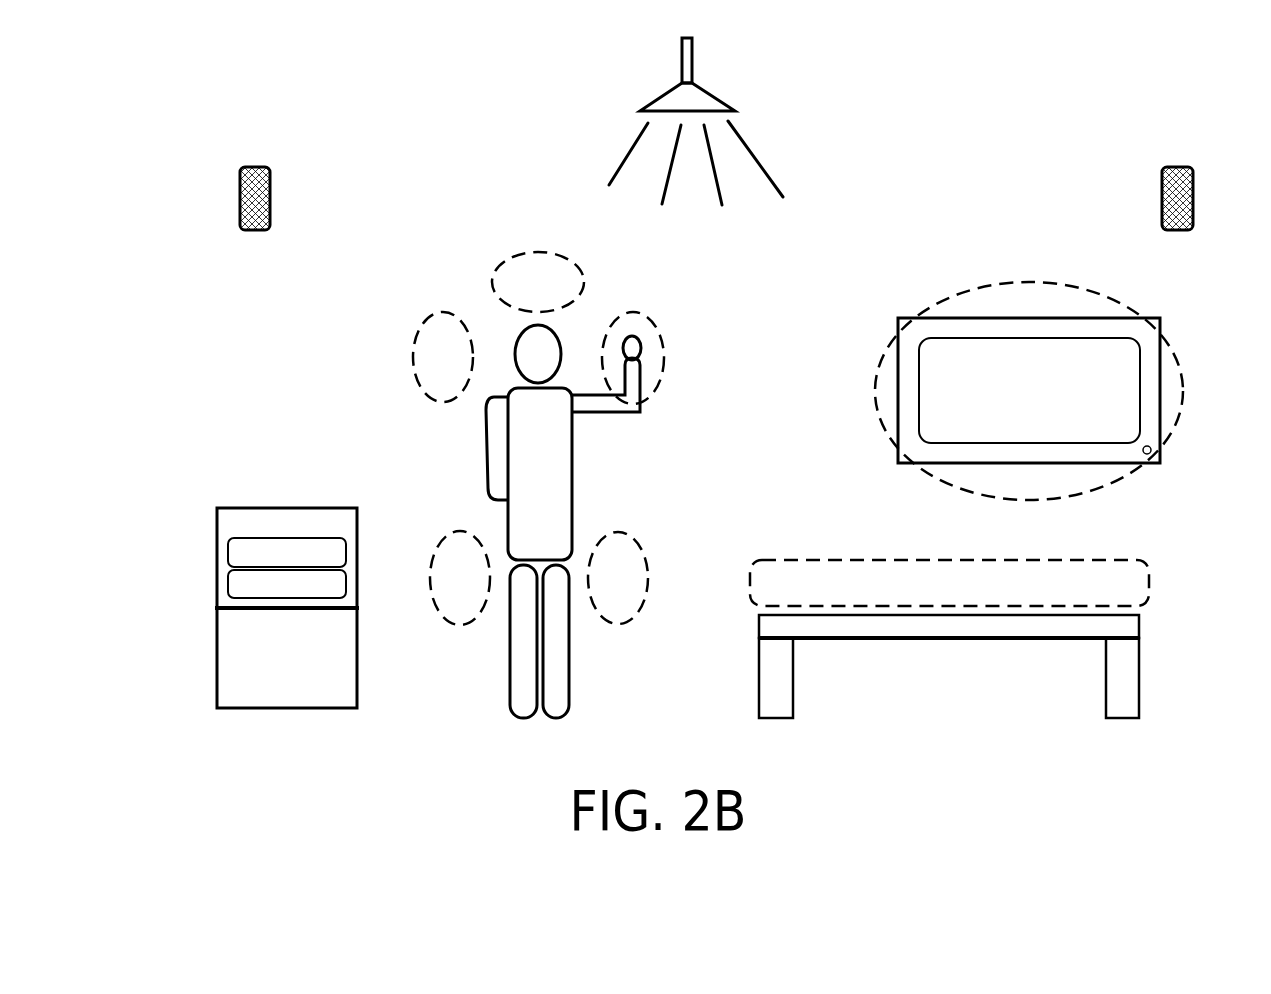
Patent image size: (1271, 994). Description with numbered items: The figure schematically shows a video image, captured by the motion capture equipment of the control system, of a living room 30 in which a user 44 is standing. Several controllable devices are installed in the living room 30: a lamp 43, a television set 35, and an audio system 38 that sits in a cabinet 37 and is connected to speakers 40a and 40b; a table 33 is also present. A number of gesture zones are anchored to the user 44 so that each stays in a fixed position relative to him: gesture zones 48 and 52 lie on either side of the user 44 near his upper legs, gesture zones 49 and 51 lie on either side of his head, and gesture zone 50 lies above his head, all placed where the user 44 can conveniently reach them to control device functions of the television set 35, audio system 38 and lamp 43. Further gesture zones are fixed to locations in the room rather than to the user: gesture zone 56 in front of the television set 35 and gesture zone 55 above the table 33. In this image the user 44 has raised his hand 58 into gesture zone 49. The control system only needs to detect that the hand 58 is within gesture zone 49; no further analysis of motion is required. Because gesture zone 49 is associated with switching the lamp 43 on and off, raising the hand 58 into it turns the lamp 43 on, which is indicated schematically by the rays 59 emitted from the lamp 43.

The living room 30 is at (453, 90).
The table 33 is at (1139, 680).
The television set 35 is at (1030, 318).
The cabinet 37 is at (286, 508).
The audio system 38 is at (243, 537).
The speaker 40a is at (240, 199).
The speaker 40b is at (1193, 199).
The lamp 43 is at (712, 97).
The user 44 is at (572, 448).
The gesture zone 48 is at (648, 569).
The gesture zone 49 is at (633, 312).
The gesture zone 50 is at (551, 252).
The gesture zone 51 is at (413, 348).
The gesture zone 52 is at (430, 569).
The gesture zone 55 is at (812, 560).
The gesture zone 56 is at (1185, 377).
The hand 58 is at (641, 348).
The rays 59 is at (758, 157).